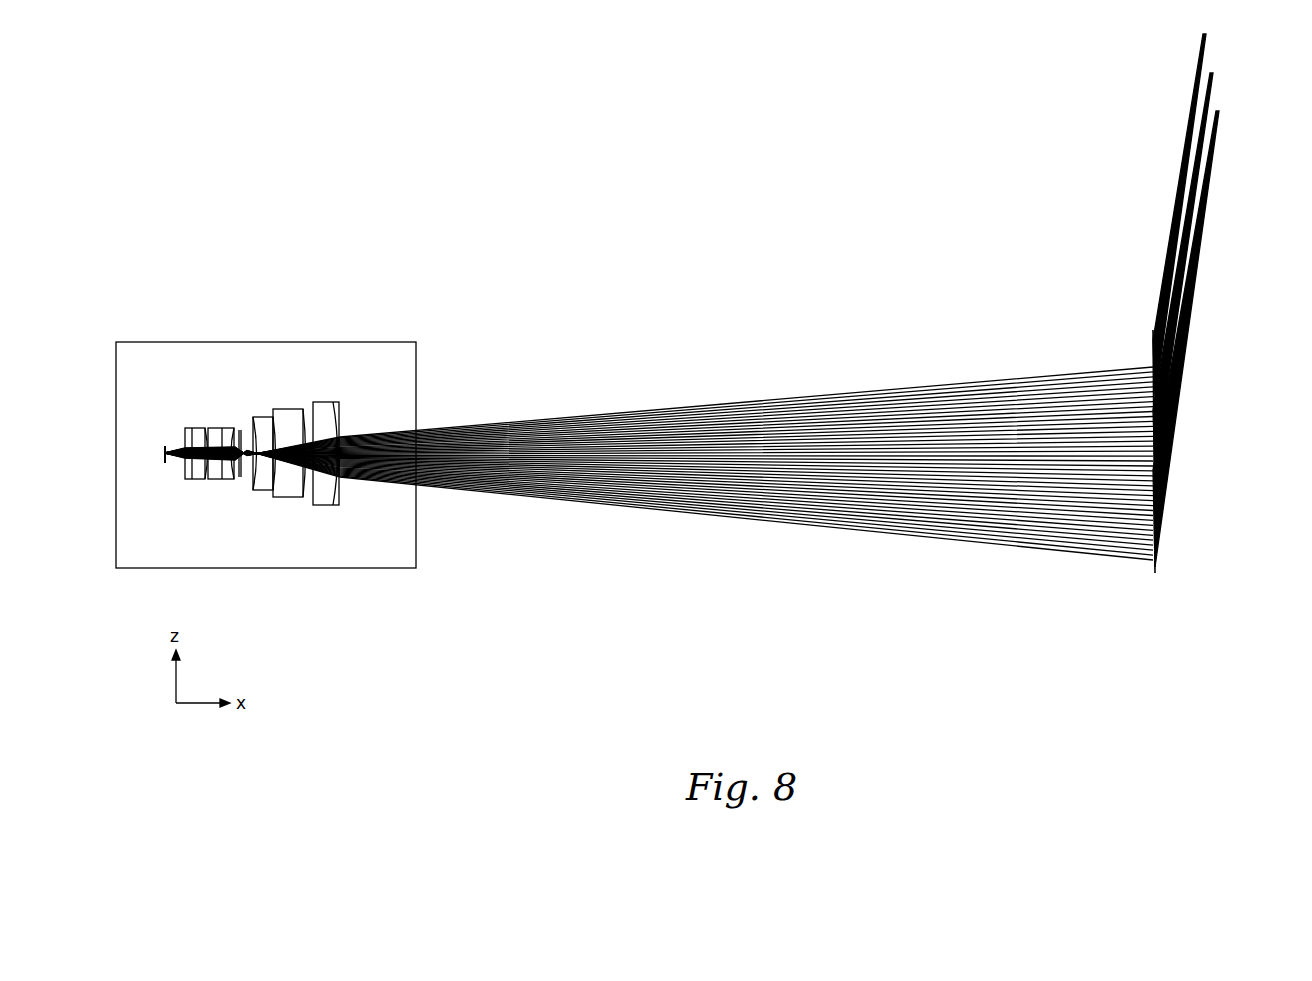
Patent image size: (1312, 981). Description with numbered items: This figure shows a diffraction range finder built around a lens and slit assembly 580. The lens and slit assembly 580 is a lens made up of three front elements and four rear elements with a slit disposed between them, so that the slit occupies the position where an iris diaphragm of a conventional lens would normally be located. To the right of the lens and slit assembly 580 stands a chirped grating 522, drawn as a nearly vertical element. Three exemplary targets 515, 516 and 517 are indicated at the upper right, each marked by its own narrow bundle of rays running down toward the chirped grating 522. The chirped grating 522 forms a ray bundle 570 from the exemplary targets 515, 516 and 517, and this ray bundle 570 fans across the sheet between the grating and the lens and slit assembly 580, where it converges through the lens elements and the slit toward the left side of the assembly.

The lens and slit assembly 580 is at (282, 342).
The ray bundle 570 is at (773, 395).
The chirped grating 522 is at (1152, 570).
The exemplary target 515 is at (1220, 111).
The exemplary target 516 is at (1214, 73).
The exemplary target 517 is at (1207, 34).